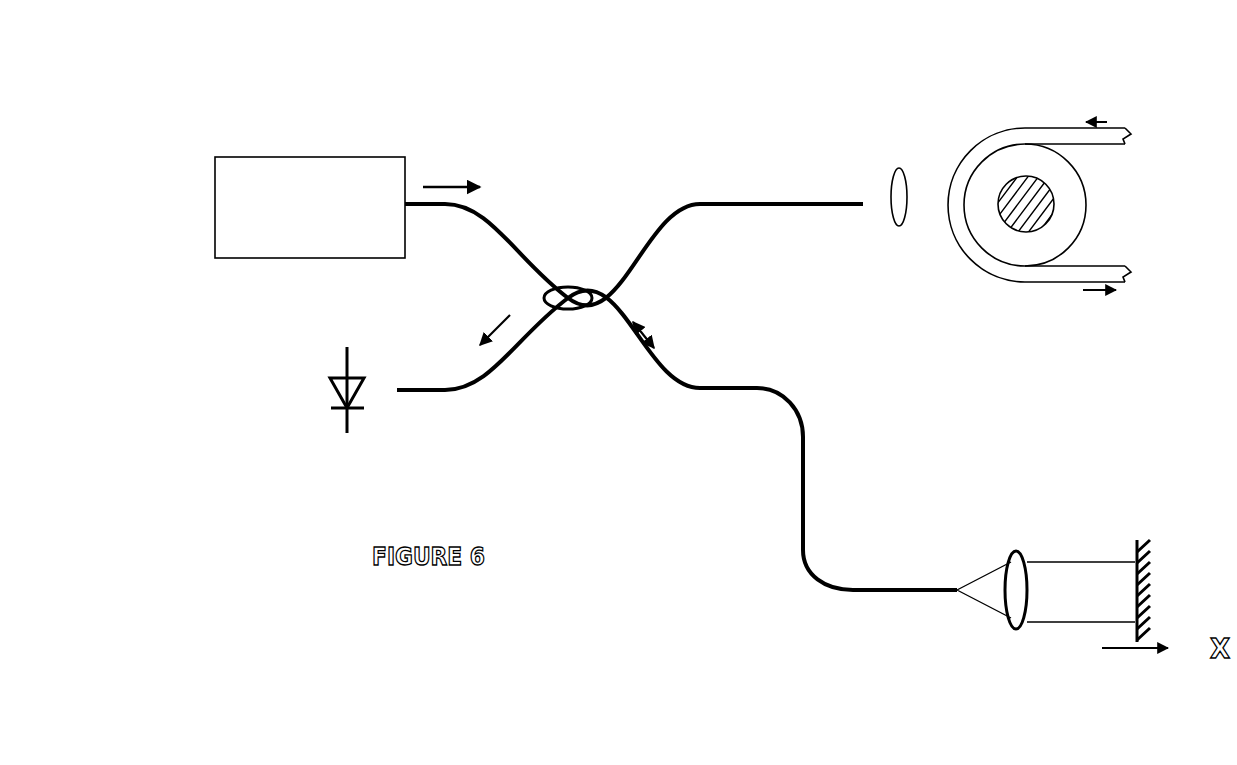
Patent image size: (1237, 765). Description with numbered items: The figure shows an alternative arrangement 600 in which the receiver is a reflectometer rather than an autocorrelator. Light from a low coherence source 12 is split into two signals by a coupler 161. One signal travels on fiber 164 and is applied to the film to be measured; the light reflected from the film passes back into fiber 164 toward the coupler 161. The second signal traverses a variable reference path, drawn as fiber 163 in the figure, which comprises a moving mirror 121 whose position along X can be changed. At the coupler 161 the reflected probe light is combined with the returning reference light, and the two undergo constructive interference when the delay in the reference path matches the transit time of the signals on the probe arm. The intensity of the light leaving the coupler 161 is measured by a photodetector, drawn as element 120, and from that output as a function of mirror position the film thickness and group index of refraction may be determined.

The alternative arrangement 600 is at (310, 86).
The low coherence source 12 is at (377, 260).
The coupler 161 is at (567, 288).
The fiber 164 is at (750, 202).
The reference arm optical fiber 163 is at (698, 392).
The photodetector 120 is at (330, 378).
The moving mirror 121 is at (1137, 549).